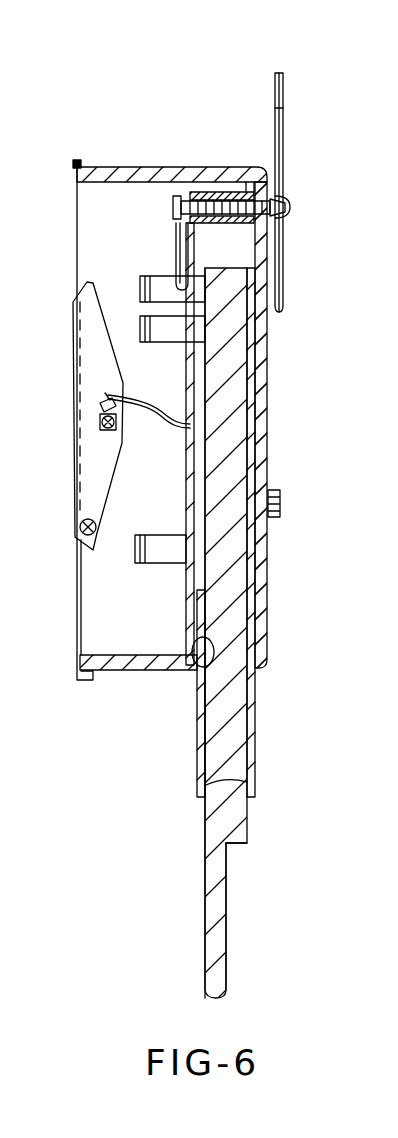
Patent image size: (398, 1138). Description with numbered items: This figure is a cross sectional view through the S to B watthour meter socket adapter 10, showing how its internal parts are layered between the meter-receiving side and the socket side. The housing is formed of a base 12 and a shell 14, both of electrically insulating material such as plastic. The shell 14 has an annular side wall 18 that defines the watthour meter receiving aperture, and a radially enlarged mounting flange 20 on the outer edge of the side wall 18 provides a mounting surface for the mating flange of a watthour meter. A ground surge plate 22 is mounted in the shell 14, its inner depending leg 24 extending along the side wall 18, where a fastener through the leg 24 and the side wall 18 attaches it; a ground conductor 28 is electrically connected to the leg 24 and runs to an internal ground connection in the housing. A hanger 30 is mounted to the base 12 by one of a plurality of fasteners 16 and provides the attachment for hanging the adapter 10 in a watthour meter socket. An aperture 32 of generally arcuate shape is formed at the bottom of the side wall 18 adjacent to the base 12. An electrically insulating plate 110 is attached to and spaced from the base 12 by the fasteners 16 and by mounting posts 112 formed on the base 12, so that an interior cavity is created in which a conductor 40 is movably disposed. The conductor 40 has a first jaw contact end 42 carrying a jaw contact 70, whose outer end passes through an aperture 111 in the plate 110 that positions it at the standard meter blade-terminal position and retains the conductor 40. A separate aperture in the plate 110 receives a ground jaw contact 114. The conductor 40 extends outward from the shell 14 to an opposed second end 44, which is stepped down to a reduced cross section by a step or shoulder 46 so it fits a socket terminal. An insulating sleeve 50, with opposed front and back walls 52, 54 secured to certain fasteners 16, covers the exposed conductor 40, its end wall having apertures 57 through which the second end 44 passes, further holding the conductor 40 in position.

The S to B watthour meter socket adapter 10 is at (195, 53).
The base 12 is at (266, 386).
The shell 14 is at (163, 152).
The fasteners 16 is at (288, 203).
The annular side wall 18 is at (127, 165).
The mounting flange 20 is at (88, 158).
The ground surge plate 22 is at (80, 347).
The inner depending leg 24 is at (100, 388).
The ground conductor 28 is at (157, 413).
The hanger 30 is at (282, 80).
The aperture 32 is at (197, 667).
The conductor 40 is at (208, 833).
The first jaw contact end 42 is at (228, 352).
The second end 44 is at (205, 950).
The step or shoulder 46 is at (240, 848).
The insulating sleeve 50 is at (280, 737).
The front wall 52 is at (197, 755).
The back wall 54 is at (257, 700).
The apertures 57 is at (257, 768).
The jaw contact 70 is at (140, 280).
The insulating plate 110 is at (184, 597).
The apertures 111 is at (180, 282).
The mounting posts 112 is at (208, 195).
The ground jaw contact 114 is at (158, 537).